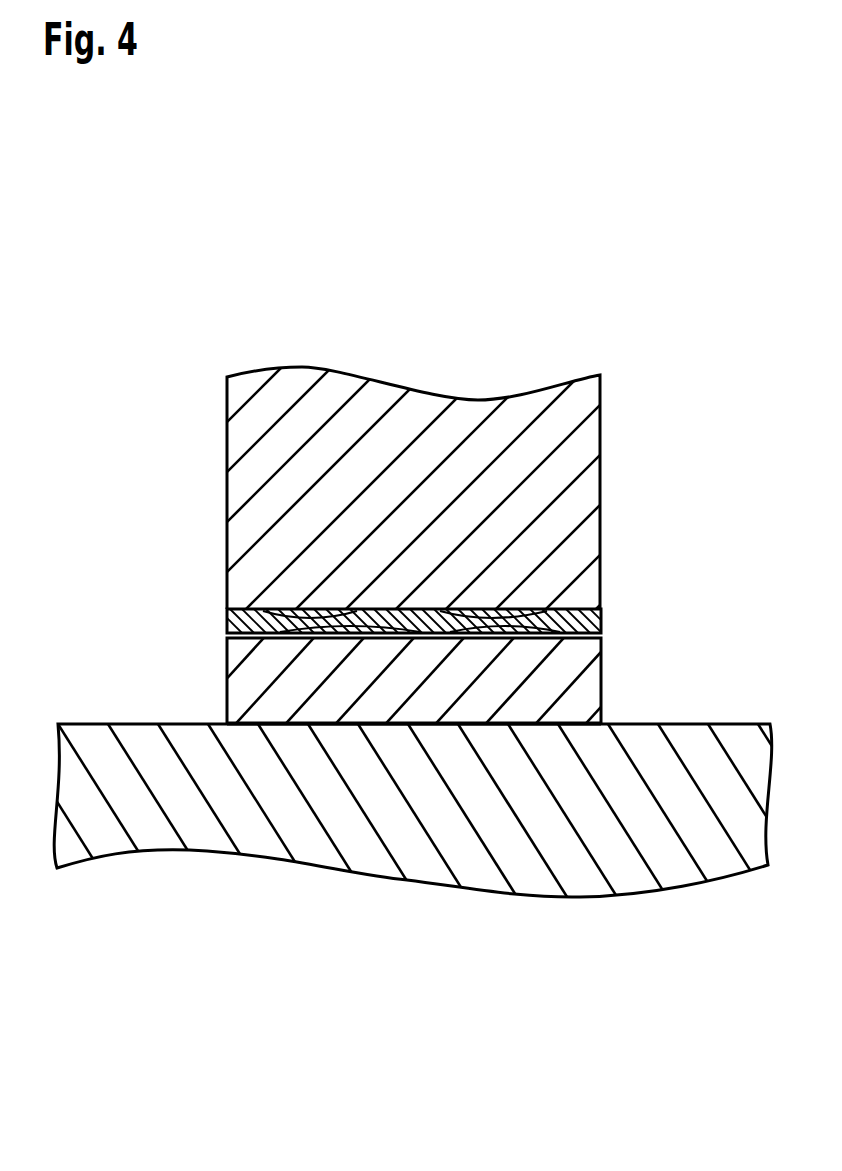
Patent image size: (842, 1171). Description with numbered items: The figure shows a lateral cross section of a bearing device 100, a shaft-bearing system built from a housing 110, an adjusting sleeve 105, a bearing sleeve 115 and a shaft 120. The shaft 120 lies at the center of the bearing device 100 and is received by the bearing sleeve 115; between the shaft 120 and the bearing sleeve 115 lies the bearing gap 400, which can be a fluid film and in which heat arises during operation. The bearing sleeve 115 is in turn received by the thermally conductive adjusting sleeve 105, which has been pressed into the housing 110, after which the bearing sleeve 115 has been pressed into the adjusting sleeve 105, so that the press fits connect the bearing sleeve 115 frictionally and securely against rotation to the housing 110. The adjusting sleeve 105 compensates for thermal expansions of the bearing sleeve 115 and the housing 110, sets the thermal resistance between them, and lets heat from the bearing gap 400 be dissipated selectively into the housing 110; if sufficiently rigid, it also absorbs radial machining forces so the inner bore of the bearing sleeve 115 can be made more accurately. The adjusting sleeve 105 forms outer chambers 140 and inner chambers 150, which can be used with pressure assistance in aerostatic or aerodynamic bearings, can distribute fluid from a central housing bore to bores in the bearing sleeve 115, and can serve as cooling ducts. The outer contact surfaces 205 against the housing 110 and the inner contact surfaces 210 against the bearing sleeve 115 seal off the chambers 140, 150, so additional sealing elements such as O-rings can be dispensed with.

The bearing device 100 is at (186, 307).
The housing 110 is at (588, 543).
The bearing sleeve 115 is at (587, 680).
The shaft 120 is at (677, 863).
The adjusting sleeve 105 is at (595, 622).
The outer chambers 140 is at (530, 605).
The inner chambers 150 is at (472, 646).
The outer contact surfaces 205 is at (358, 599).
The inner contact surfaces 210 is at (418, 646).
The bearing gap 400 is at (548, 733).